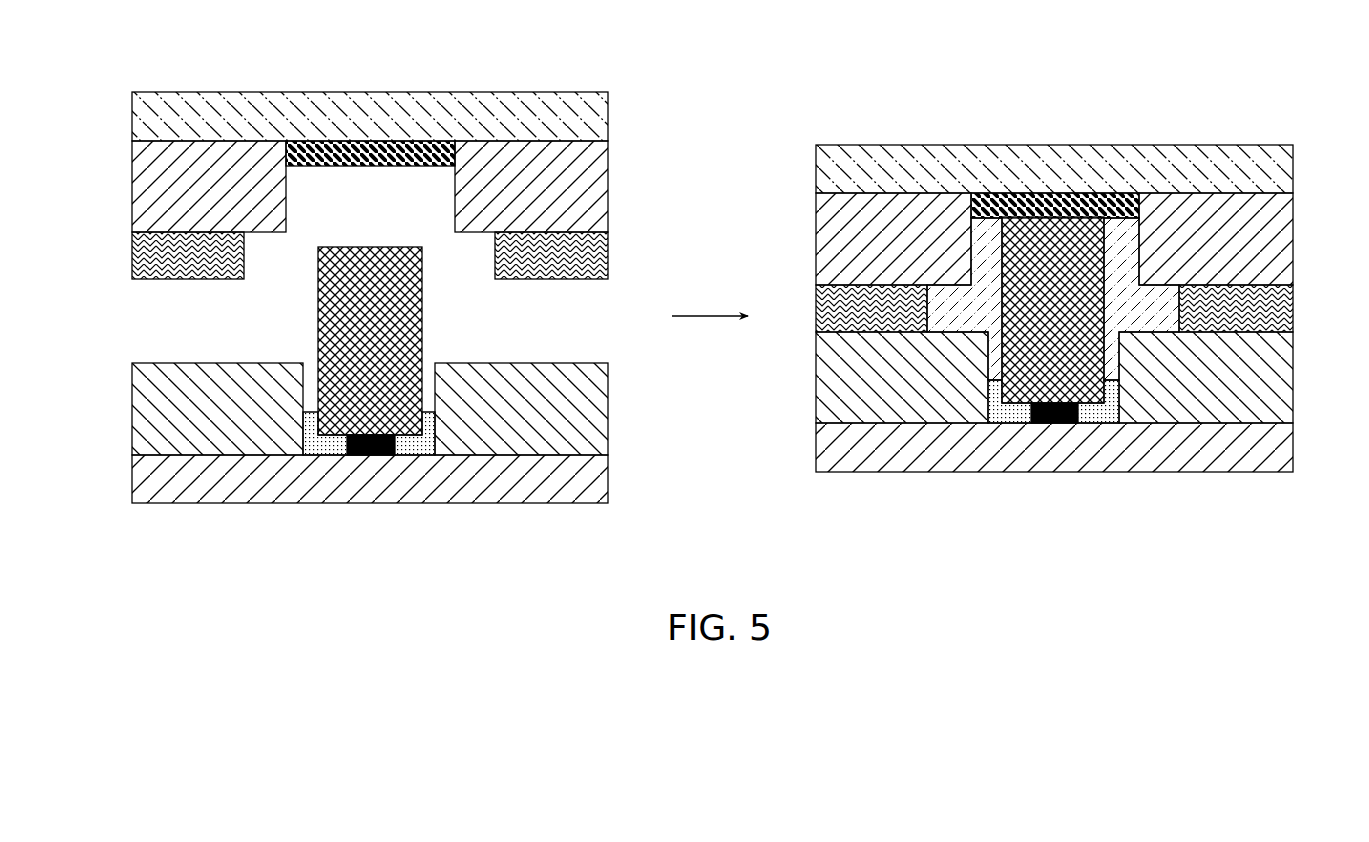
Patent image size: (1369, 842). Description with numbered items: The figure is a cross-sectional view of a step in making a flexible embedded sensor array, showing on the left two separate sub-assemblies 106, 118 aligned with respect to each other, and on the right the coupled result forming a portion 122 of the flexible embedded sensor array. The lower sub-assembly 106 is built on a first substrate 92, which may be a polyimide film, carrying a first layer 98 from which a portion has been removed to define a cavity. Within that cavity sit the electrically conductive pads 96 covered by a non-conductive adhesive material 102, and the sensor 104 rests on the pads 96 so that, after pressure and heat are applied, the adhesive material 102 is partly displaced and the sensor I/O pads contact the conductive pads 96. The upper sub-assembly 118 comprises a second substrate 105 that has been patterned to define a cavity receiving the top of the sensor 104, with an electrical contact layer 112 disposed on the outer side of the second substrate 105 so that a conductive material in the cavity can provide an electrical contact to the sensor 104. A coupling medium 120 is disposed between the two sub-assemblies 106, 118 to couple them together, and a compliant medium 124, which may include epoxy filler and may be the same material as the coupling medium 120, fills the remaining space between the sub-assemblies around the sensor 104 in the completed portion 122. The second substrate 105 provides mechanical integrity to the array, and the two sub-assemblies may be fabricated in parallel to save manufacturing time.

The sub-assembly 118 is at (138, 50).
The sub-assembly 106 is at (138, 535).
The portion of a flexible embedded sensor array 122 is at (1253, 111).
The electrical contact layer 112 is at (608, 113).
The second substrate 105 is at (608, 174).
The coupling medium 120 is at (608, 258).
The compliant medium 124 is at (1140, 272).
The first layer 98 is at (608, 413).
The first substrate 92 is at (608, 484).
The non-conductive adhesive material 102 is at (317, 445).
The electrically conductive pads 96 is at (384, 455).
The sensor 104 is at (422, 302).